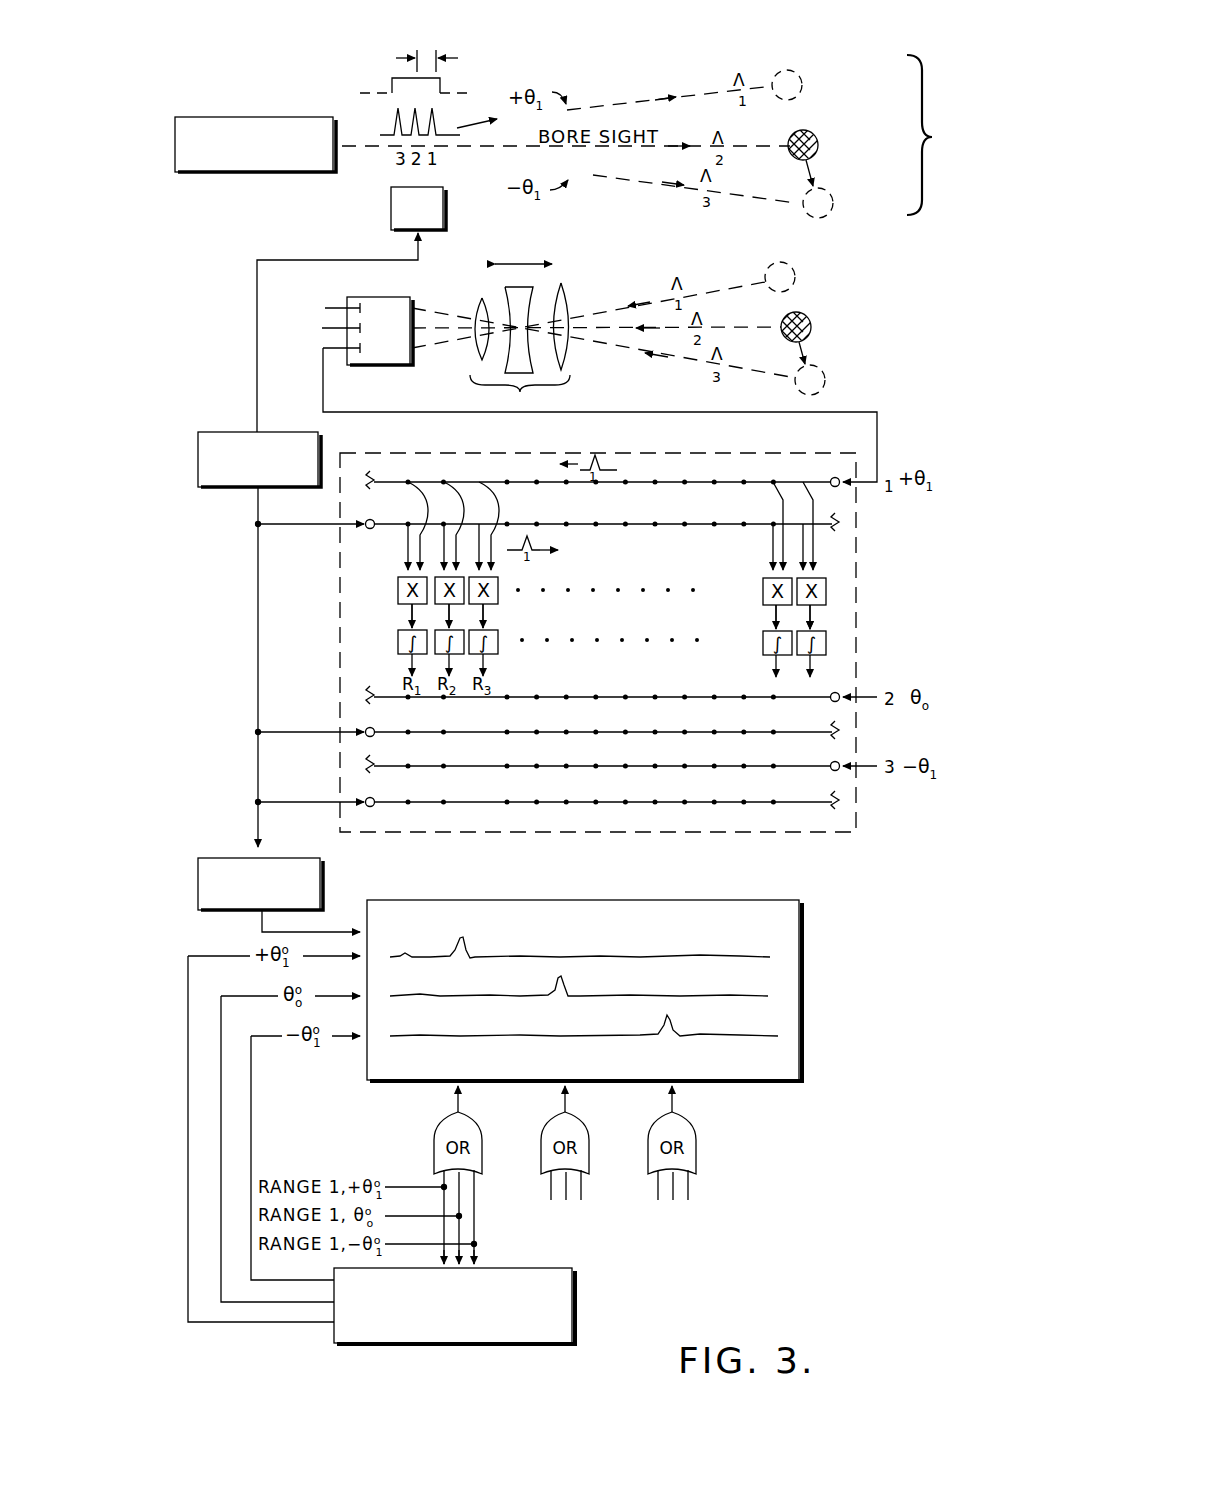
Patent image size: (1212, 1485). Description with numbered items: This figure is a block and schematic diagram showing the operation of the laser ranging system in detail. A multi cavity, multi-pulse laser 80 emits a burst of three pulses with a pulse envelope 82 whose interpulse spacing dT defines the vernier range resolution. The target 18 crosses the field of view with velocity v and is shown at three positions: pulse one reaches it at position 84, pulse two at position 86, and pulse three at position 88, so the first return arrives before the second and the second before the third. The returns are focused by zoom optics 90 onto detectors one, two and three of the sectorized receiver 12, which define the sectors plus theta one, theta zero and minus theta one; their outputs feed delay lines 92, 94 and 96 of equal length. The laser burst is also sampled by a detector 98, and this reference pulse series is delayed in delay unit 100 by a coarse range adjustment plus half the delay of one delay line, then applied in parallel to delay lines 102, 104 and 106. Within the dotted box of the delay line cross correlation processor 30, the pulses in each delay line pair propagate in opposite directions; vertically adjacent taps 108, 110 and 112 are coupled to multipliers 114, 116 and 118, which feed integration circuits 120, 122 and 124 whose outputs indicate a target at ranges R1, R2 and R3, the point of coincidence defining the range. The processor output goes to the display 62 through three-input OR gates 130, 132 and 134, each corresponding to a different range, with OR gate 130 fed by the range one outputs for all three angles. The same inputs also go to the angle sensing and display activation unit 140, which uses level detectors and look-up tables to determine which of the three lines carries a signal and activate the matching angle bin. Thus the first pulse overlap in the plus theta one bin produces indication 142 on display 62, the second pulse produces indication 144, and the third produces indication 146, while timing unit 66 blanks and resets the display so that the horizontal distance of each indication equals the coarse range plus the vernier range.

The multi cavity, multi-pulse laser 80 is at (255, 144).
The pulse envelope 82 is at (458, 58).
The target position 84 is at (807, 72).
The target position 86 is at (814, 135).
The target position 88 is at (826, 192).
The target 18 is at (926, 135).
The detector 98 is at (443, 222).
The sectorized receiver 12 is at (395, 297).
The zoom optics 90 is at (551, 337).
The delay unit 100 is at (268, 432).
The delay line cross correlation processor 30 is at (858, 585).
The delay line 92 is at (805, 479).
The delay line 94 is at (804, 696).
The delay line 96 is at (804, 765).
The delay line 102 is at (548, 532).
The delay line 104 is at (384, 740).
The delay line 106 is at (386, 810).
The tap 108 is at (418, 488).
The tap 110 is at (453, 488).
The tap 112 is at (486, 488).
The multiplier 114 is at (398, 586).
The multiplier 116 is at (450, 604).
The multiplier 118 is at (492, 604).
The integration circuit 120 is at (398, 644).
The integration circuit 122 is at (442, 657).
The integration circuit 124 is at (490, 655).
The timing unit 66 is at (278, 858).
The display 62 is at (805, 943).
The indication 142 is at (470, 956).
The indication 144 is at (567, 995).
The indication 146 is at (676, 1034).
The OR gate 130 is at (480, 1126).
The OR gate 132 is at (587, 1126).
The OR gate 134 is at (694, 1126).
The angle sensing and display activation unit 140 is at (575, 1282).